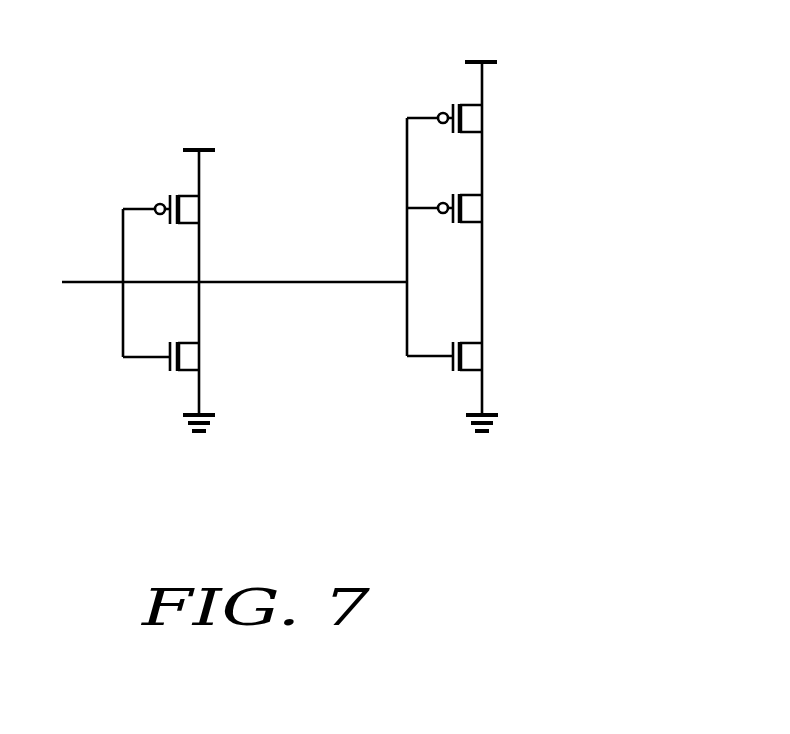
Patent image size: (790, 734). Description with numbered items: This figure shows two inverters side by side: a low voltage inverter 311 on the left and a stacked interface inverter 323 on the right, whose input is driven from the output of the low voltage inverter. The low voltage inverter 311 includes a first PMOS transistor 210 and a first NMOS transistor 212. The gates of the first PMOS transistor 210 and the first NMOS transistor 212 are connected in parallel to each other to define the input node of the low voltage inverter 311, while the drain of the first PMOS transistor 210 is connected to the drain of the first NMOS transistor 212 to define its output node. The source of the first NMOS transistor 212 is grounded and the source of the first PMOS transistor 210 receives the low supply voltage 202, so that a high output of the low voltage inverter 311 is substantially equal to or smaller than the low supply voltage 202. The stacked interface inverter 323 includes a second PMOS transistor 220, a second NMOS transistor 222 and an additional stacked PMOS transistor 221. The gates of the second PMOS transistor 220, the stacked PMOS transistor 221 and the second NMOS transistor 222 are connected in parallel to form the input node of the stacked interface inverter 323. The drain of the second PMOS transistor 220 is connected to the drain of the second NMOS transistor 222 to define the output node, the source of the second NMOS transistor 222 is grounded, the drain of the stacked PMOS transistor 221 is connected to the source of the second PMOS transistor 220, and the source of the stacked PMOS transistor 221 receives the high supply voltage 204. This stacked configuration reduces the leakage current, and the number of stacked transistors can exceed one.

The low voltage V_L 202 is at (198, 129).
The high voltage V_H 204 is at (481, 41).
The PMOS transistor P1 210 is at (184, 210).
The NMOS transistor N1 212 is at (183, 381).
The PMOS transistor P2 220 is at (467, 210).
The PMOS transistor PS2 221 is at (467, 123).
The NMOS transistor N2 222 is at (422, 450).
The low voltage inverter 311 is at (183, 313).
The stacked interface inverter 323 is at (465, 281).